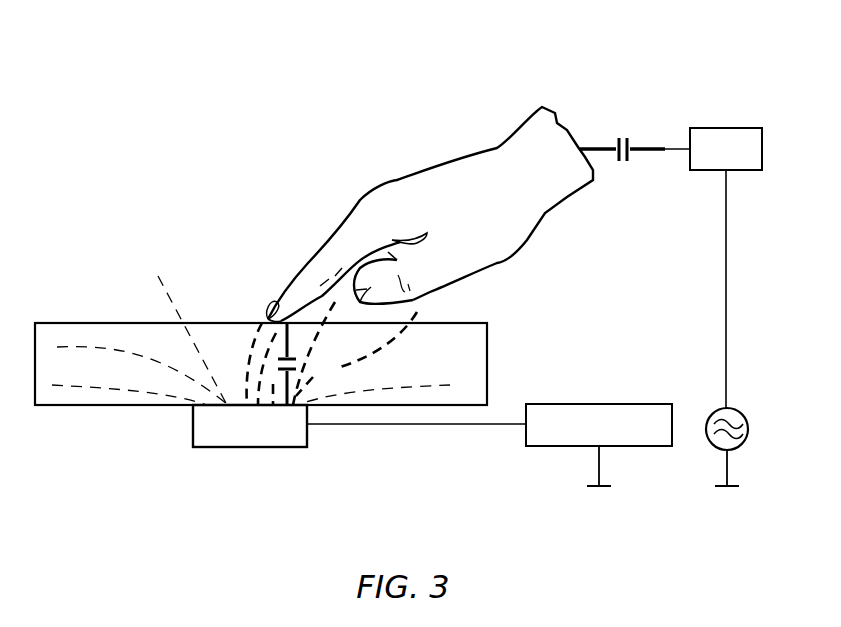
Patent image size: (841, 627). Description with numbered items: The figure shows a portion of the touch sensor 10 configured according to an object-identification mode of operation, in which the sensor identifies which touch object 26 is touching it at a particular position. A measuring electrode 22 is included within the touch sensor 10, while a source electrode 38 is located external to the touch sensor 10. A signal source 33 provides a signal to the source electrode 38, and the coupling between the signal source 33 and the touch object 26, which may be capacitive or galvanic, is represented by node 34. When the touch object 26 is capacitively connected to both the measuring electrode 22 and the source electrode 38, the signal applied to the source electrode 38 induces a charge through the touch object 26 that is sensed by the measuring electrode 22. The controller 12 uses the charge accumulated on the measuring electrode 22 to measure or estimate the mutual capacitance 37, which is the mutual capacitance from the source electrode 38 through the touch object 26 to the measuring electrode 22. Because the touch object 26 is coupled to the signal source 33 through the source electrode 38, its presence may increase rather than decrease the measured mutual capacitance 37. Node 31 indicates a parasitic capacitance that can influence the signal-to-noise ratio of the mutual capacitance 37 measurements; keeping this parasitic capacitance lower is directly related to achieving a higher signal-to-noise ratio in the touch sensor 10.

The touch sensor 10 is at (200, 254).
The controller 12 is at (610, 403).
The measuring electrode 22 is at (250, 449).
The touch object 26 is at (430, 214).
The node indicating parasitic capacitance 31 is at (455, 426).
The signal source 33 is at (739, 411).
The node representing coupling between signal source and touch object 34 is at (624, 163).
The mutual capacitance 37 is at (303, 363).
The source electrode 38 is at (728, 127).